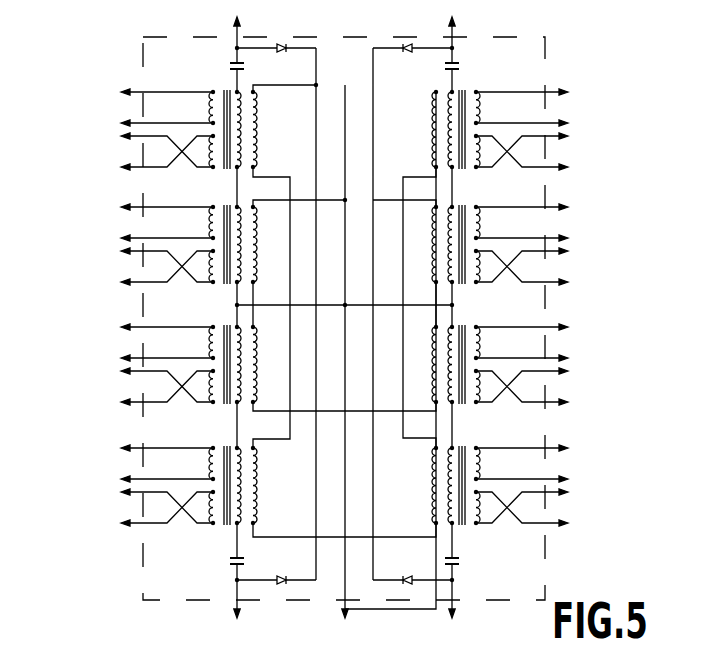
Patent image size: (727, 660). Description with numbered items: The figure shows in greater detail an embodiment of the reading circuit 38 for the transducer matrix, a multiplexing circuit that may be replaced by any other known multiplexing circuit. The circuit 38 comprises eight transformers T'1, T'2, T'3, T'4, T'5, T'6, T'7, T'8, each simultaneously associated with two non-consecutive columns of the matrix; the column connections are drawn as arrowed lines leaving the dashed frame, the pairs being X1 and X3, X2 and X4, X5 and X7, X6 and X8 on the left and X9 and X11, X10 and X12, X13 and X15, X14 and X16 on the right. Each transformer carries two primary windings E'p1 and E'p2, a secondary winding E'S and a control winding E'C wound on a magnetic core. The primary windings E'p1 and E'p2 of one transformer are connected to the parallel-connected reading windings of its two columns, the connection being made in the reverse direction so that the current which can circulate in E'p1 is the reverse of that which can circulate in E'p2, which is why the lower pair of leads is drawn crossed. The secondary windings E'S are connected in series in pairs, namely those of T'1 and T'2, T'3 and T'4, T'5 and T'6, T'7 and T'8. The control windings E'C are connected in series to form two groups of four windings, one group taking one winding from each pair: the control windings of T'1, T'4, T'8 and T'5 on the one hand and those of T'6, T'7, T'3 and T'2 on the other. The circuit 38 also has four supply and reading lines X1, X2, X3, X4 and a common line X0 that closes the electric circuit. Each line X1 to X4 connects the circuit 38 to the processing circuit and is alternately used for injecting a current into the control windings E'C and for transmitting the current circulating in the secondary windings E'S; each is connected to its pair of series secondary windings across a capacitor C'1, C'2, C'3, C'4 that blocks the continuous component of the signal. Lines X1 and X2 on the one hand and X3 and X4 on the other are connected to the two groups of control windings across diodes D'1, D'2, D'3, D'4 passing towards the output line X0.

The reading circuit 38 is at (143, 42).
The capacitor C'1 is at (203, 70).
The capacitor C'2 is at (203, 579).
The capacitor C'3 is at (472, 71).
The capacitor C'4 is at (484, 576).
The diode D'1 is at (276, 65).
The diode D'2 is at (276, 565).
The diode D'3 is at (412, 66).
The diode D'4 is at (412, 567).
The transformer T'1 is at (225, 145).
The transformer T'2 is at (218, 262).
The transformer T'3 is at (215, 383).
The transformer T'4 is at (213, 509).
The transformer T'5 is at (432, 129).
The transformer T'6 is at (467, 263).
The transformer T'7 is at (467, 382).
The transformer T'8 is at (467, 506).
The primary winding E'p1 is at (181, 107).
The primary winding E'p2 is at (184, 168).
The control winding E'C is at (276, 126).
The secondary winding E'S is at (259, 165).
The common line X0 is at (314, 618).
The supply and reading line X1 is at (264, 320).
The supply and reading line X2 is at (155, 418).
The supply and reading line X3 is at (292, 89).
The supply and reading line X4 is at (148, 267).
The column connection X5 is at (148, 344).
The column connection X6 is at (148, 464).
The column connection X7 is at (148, 388).
The column connection X8 is at (148, 509).
The column connection X9 is at (533, 107).
The column connection X10 is at (538, 222).
The column connection X11 is at (538, 151).
The column connection X12 is at (538, 266).
The column connection X13 is at (538, 342).
The column connection X14 is at (538, 463).
The column connection X15 is at (538, 386).
The column connection X16 is at (538, 508).